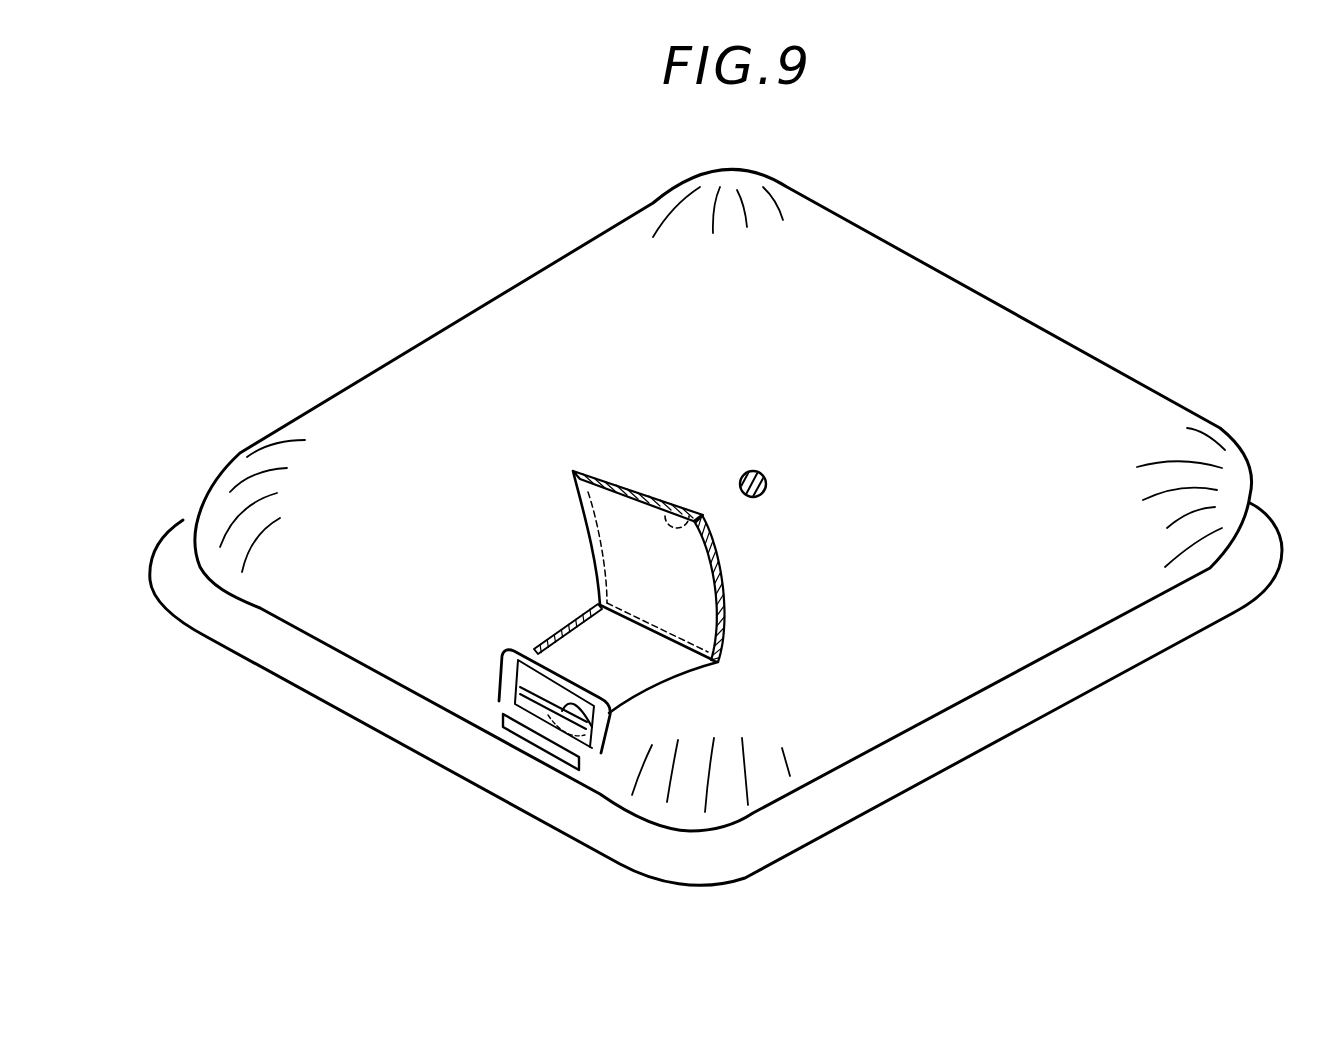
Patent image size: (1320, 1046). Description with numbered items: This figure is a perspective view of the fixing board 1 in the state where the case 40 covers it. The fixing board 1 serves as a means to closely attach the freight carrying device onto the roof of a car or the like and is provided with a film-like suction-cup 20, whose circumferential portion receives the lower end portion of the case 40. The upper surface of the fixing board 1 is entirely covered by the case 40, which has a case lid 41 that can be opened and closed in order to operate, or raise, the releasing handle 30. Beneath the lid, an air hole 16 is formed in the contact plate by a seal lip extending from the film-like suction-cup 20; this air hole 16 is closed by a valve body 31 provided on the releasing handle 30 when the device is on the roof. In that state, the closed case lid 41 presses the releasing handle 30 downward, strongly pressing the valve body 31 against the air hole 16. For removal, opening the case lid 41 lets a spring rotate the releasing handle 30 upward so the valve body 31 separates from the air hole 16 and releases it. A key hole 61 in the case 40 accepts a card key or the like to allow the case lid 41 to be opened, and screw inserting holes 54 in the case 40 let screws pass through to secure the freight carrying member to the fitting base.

The fixing board 1 is at (1052, 308).
The film-like suction-cup 20 is at (927, 749).
The case 40 is at (903, 283).
The case lid 41 is at (697, 580).
The screw inserting holes 54 is at (683, 504).
The releasing handle 30 is at (510, 650).
The valve body 31 is at (587, 762).
The air hole 16 is at (567, 690).
The key hole 61 is at (553, 745).